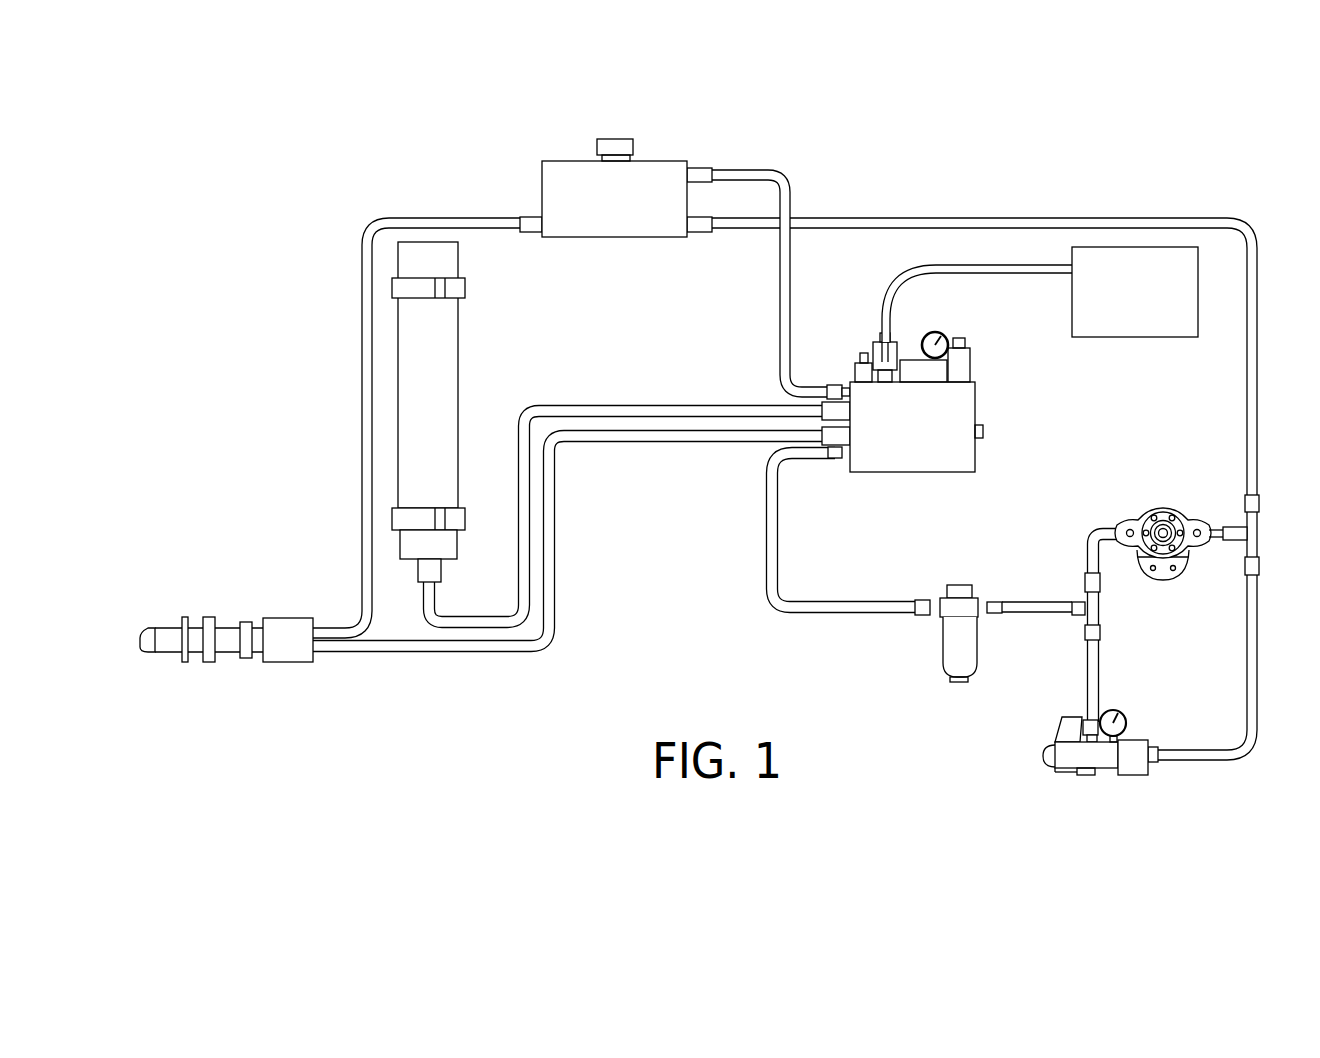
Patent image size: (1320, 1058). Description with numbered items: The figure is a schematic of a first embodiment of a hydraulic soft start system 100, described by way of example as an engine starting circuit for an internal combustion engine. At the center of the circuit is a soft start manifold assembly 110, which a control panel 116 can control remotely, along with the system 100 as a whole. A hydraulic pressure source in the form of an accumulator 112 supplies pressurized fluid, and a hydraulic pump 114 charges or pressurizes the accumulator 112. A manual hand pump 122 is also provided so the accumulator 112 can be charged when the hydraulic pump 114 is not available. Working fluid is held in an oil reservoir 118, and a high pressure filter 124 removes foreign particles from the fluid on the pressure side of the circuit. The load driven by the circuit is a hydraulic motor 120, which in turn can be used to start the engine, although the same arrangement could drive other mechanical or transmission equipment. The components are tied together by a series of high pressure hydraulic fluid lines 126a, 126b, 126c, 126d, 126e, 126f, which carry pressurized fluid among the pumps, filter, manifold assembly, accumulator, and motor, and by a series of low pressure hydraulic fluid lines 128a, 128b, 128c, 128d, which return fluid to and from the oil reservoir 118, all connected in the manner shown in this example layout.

The hydraulic soft start system 100 is at (462, 173).
The soft start manifold assembly 110 is at (912, 460).
The accumulator 112 is at (448, 378).
The hydraulic pump 114 is at (1160, 508).
The control panel 116 is at (1115, 334).
The oil reservoir 118 is at (657, 173).
The hydraulic motor 120 is at (277, 653).
The manual hand pump 122 is at (1100, 760).
The high pressure filter 124 is at (965, 646).
The high pressure hydraulic fluid line 126a is at (1089, 538).
The high pressure hydraulic fluid line 126b is at (1094, 678).
The high pressure hydraulic fluid line 126c is at (1053, 604).
The high pressure hydraulic fluid line 126d is at (776, 546).
The high pressure hydraulic fluid line 126e is at (690, 437).
The high pressure hydraulic fluid line 126f is at (692, 411).
The low pressure hydraulic fluid line 128a is at (1080, 222).
The low pressure hydraulic fluid line 128b is at (1250, 643).
The low pressure hydraulic fluid line 128c is at (783, 311).
The low pressure hydraulic fluid line 128d is at (420, 226).